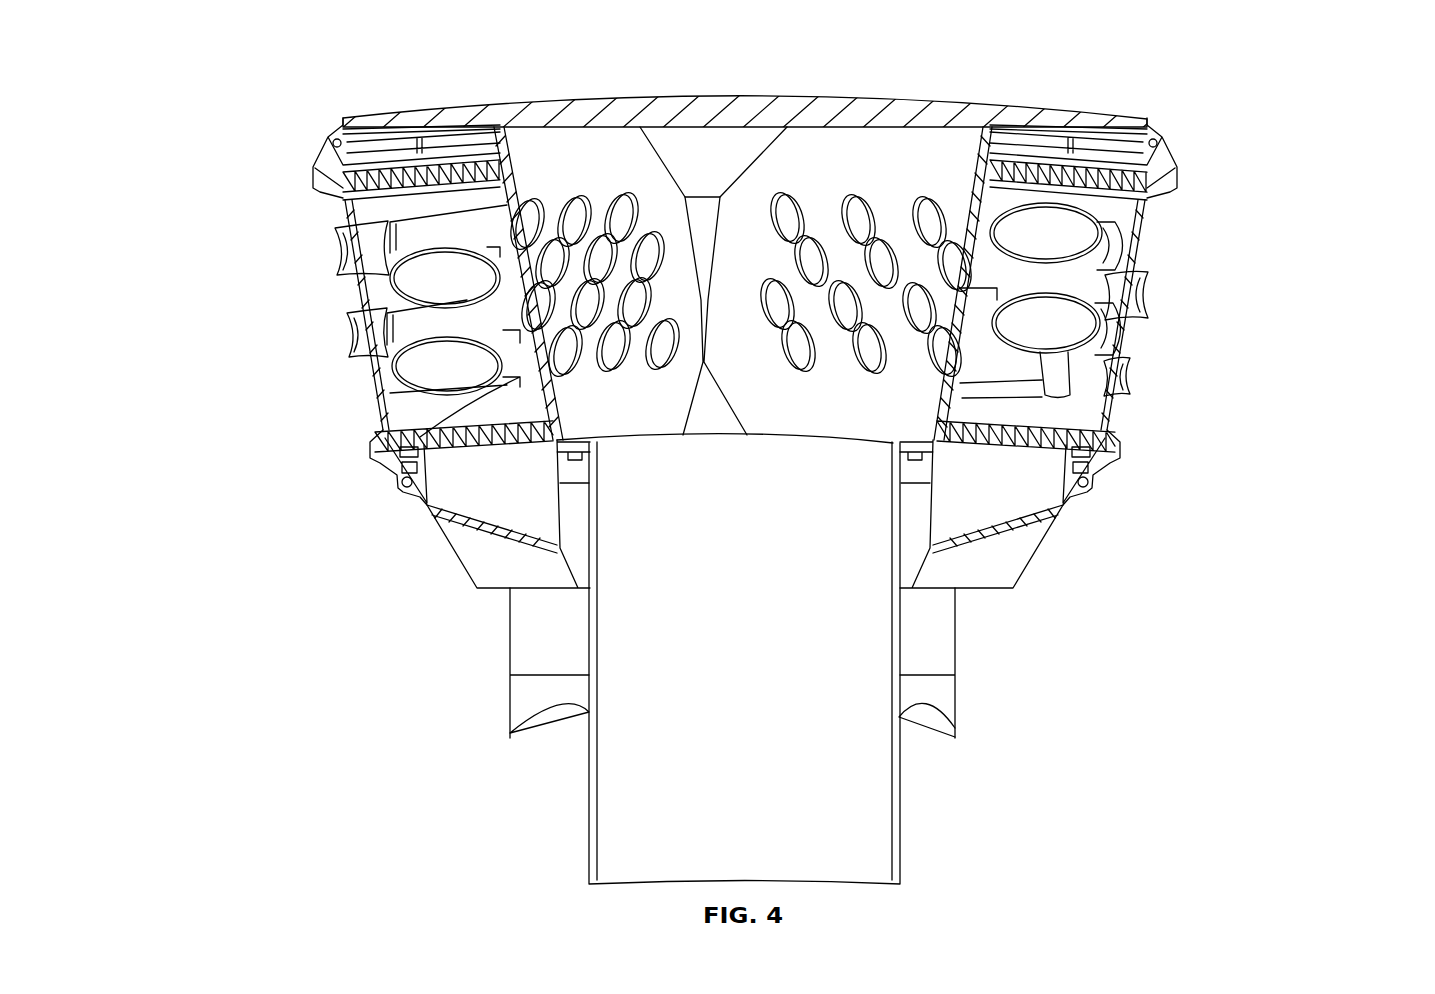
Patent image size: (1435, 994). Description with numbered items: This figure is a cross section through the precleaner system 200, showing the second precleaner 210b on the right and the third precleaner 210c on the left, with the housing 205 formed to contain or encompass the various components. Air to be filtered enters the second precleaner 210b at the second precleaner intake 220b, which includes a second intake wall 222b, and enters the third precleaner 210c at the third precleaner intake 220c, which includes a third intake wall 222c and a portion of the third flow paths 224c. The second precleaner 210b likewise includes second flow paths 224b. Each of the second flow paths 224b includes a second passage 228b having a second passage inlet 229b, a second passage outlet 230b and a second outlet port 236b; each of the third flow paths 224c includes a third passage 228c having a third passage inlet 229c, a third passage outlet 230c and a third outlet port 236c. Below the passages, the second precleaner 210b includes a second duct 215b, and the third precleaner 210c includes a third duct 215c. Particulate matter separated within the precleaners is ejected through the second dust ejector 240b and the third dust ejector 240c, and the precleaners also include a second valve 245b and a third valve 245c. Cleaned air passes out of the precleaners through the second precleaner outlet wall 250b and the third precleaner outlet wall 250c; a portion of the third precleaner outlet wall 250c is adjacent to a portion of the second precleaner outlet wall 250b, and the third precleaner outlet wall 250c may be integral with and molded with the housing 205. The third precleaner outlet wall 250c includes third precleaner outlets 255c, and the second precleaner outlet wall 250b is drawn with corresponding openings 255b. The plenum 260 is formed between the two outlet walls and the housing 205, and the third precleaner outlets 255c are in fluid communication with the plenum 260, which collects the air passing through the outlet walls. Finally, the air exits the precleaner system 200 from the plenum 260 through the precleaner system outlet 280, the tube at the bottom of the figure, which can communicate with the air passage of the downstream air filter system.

The precleaner system 200 is at (402, 58).
The housing 205 is at (690, 148).
The plenum 260 is at (718, 172).
The third precleaner outlet wall 250c is at (592, 158).
The second precleaner outlet wall 250b is at (815, 152).
The third precleaner outlet 255c is at (533, 205).
The perforations 255b is at (915, 205).
The third precleaner 210c is at (150, 321).
The second precleaner 210b is at (1312, 321).
The third precleaner intake 220c is at (262, 319).
The second precleaner intake 220b is at (1196, 315).
The third passage 228c is at (421, 230).
The second passage 228b is at (1067, 237).
The third intake wall 222c is at (343, 208).
The second intake wall 222b is at (1143, 232).
The third flow paths 224c is at (335, 251).
The second flow paths 224b is at (1131, 378).
The third passage inlet 229c is at (352, 332).
The second passage inlet 229b is at (1137, 297).
The third passage outlet 230c is at (533, 268).
The second passage outlet 230b is at (983, 262).
The third outlet port 236c is at (378, 447).
The second outlet port 236b is at (1108, 462).
The third duct 215c is at (457, 485).
The second duct 215b is at (1053, 502).
The third dust ejector 240c is at (512, 655).
The second dust ejector 240b is at (946, 655).
The third valve 245c is at (510, 700).
The second valve 245b is at (948, 700).
The precleaner system outlet 280 is at (603, 845).